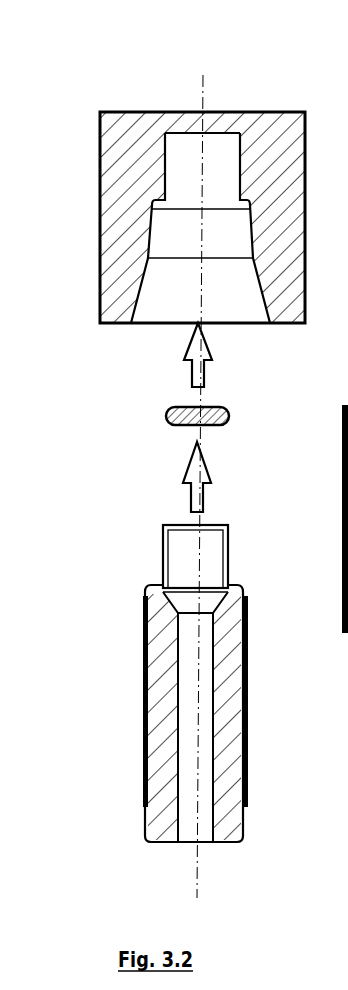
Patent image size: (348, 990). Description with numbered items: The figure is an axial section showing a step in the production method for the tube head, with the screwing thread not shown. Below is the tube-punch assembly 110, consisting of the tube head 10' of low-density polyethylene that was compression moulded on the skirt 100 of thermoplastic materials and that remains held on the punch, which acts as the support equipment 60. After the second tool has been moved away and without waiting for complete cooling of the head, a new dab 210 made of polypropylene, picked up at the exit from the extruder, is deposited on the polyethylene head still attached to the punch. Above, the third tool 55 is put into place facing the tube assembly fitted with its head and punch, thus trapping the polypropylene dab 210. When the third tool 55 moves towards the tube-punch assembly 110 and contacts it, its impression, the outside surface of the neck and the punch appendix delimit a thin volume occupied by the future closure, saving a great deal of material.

The third tool 55 is at (148, 137).
The dab 210 is at (228, 423).
The tube head 10' is at (190, 724).
The support equipment 60 is at (167, 702).
The skirt 100 is at (142, 750).
The tube-punch assembly 110 is at (260, 708).